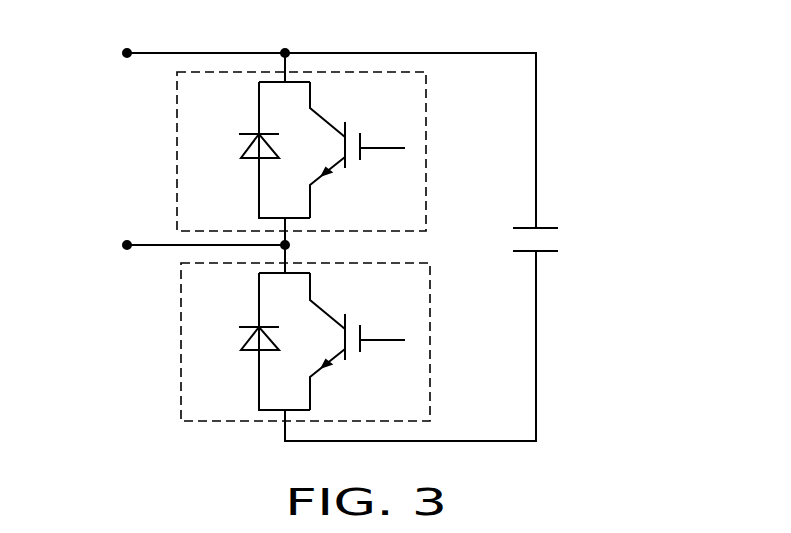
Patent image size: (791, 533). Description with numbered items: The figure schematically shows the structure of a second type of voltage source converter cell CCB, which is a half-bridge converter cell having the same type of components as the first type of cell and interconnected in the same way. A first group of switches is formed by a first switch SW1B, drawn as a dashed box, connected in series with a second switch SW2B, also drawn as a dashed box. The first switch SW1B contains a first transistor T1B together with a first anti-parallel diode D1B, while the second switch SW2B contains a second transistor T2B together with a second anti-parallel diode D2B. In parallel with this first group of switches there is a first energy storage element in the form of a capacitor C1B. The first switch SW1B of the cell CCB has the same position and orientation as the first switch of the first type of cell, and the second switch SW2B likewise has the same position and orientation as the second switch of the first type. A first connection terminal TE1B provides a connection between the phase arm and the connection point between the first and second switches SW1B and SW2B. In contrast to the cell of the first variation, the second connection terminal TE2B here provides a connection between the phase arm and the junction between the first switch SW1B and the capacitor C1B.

The cell CCB is at (622, 94).
The second connection terminal TE2B is at (152, 56).
The first connection terminal TE1B is at (152, 239).
The capacitor C1B is at (570, 235).
The first switch SW1B is at (425, 177).
The second switch SW2B is at (428, 380).
The first anti-parallel diode D1B is at (253, 150).
The second anti-parallel diode D2B is at (253, 341).
The first transistor T1B is at (366, 150).
The second transistor T2B is at (366, 341).